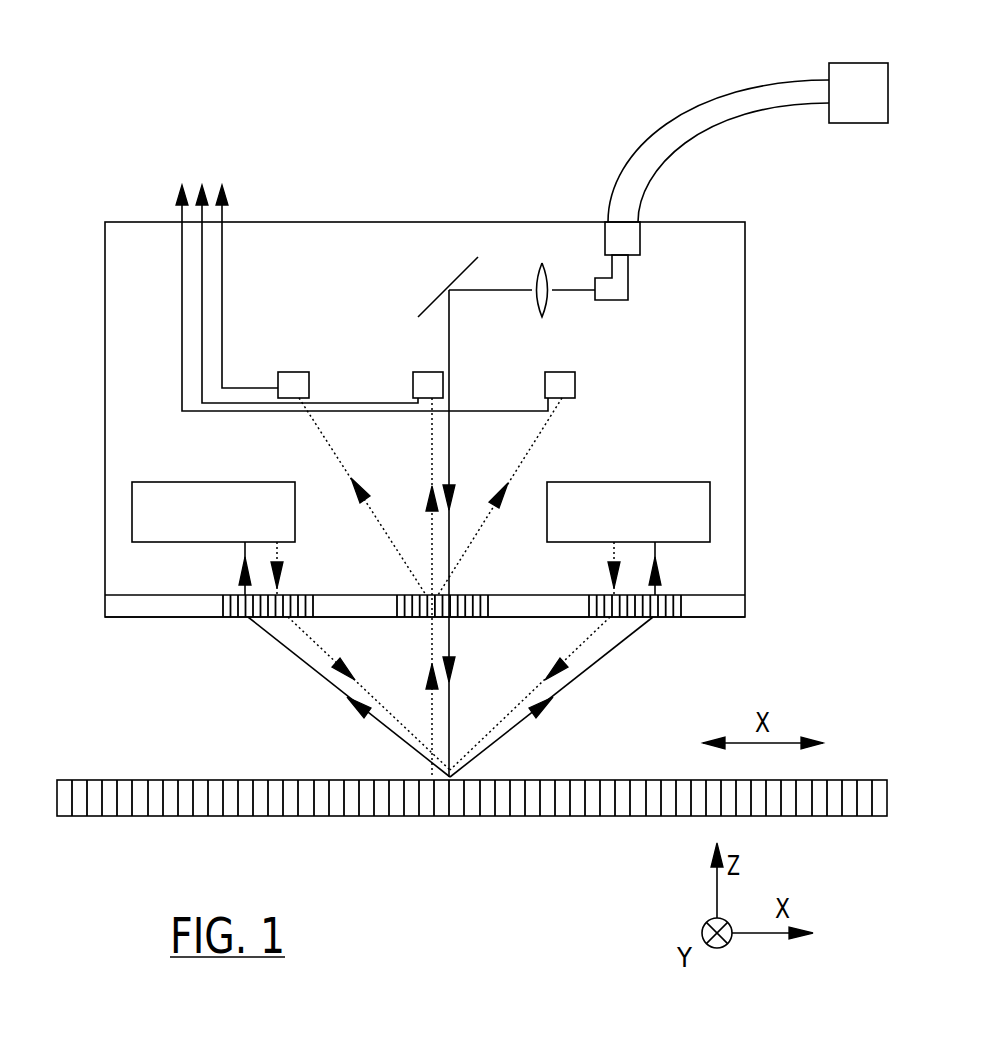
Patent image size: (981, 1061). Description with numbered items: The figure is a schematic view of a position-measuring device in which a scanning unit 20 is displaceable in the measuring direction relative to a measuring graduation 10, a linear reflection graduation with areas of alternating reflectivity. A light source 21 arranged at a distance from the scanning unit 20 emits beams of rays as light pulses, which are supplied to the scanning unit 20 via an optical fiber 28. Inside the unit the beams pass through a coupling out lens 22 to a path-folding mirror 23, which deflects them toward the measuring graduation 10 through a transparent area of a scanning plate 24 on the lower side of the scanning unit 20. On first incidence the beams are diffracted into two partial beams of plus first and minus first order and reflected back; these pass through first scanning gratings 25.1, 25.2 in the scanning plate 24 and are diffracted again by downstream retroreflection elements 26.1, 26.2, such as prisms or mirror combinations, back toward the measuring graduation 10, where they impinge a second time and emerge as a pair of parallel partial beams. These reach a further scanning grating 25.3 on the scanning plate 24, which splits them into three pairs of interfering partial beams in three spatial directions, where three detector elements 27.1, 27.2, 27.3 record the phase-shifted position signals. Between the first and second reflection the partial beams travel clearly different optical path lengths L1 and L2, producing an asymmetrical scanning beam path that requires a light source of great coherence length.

The measuring graduation 10 is at (433, 800).
The scanning unit 20 is at (120, 193).
The light source 21 is at (861, 83).
The coupling out lens 22 is at (543, 265).
The path-folding mirror 23 is at (463, 270).
The scanning plate 24 is at (737, 605).
The first scanning grating 25.1 is at (243, 607).
The first scanning grating 25.2 is at (660, 607).
The further scanning grating 25.3 is at (413, 595).
The retroreflection element 26.1 is at (150, 500).
The retroreflection element 26.2 is at (683, 502).
The detector element 27.1 is at (295, 374).
The detector element 27.2 is at (430, 374).
The detector element 27.3 is at (560, 374).
The optical fiber 28 is at (675, 125).
The optical path length L1 is at (372, 763).
The optical path length L2 is at (658, 647).